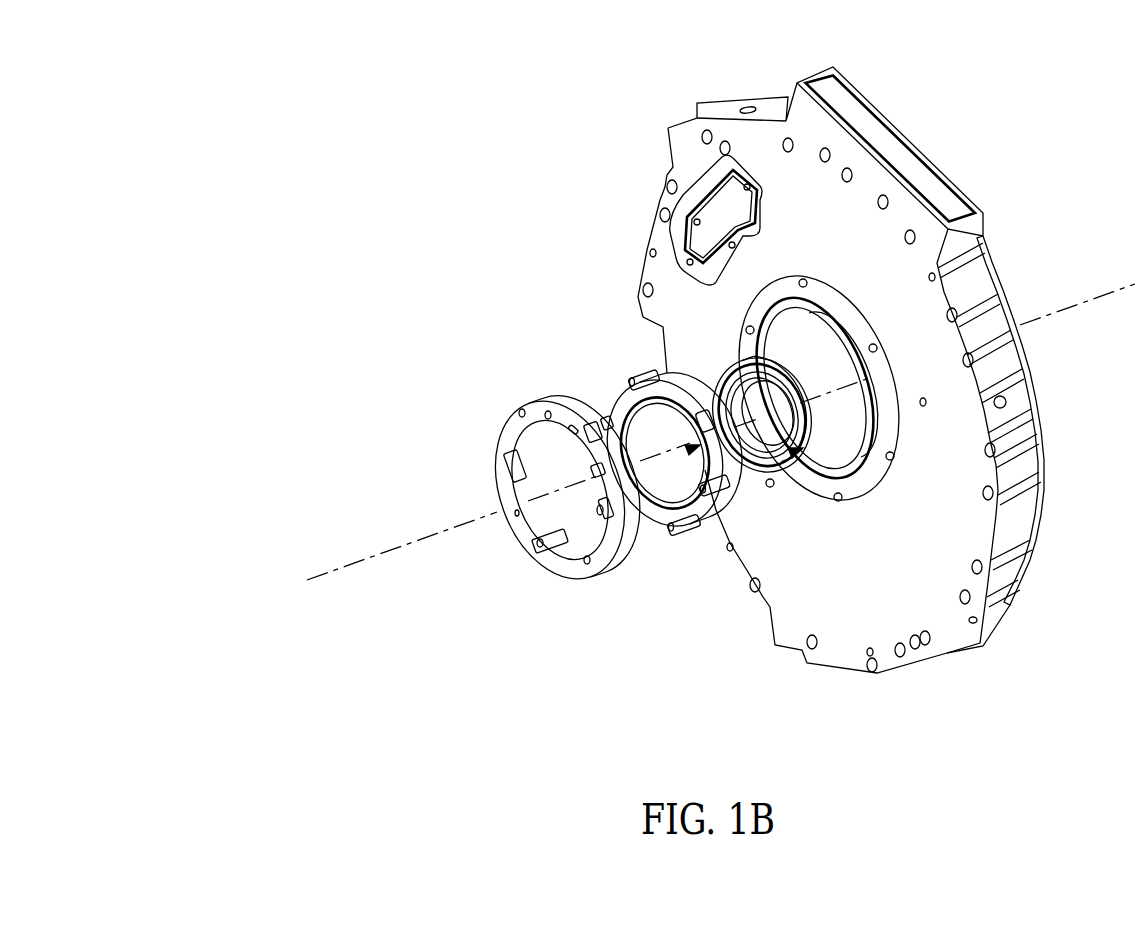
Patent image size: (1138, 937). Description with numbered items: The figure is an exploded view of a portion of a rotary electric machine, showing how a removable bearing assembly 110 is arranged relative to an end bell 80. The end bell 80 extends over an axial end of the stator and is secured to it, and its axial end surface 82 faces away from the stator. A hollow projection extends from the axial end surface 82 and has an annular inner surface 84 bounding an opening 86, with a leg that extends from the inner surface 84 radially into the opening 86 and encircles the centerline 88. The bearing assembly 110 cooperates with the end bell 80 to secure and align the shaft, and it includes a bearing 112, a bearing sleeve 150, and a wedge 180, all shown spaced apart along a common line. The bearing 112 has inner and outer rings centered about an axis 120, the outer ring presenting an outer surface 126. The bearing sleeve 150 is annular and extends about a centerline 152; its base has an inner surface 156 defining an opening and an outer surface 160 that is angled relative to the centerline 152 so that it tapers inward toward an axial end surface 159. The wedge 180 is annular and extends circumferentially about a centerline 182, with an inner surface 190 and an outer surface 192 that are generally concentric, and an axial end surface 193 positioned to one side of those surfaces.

The end bell 80 is at (764, 84).
The axial end surface 82 is at (963, 533).
The annular inner surface 84 is at (850, 463).
The opening 86 is at (843, 342).
The centerline 88 is at (670, 432).
The axis 120 is at (721, 432).
The centerline 152 is at (721, 432).
The centerline 182 is at (432, 530).
The bearing assembly 110 is at (583, 327).
The bearing 112 is at (813, 497).
The outer surface 126 is at (800, 422).
The bearing sleeve 150 is at (623, 442).
The inner surface 156 is at (633, 512).
The axial end surface 159 is at (650, 492).
The outer surface 160 is at (645, 368).
The wedge 180 is at (536, 466).
The inner surface 190 is at (540, 556).
The outer surface 192 is at (594, 418).
The axial end surface 193 is at (505, 440).